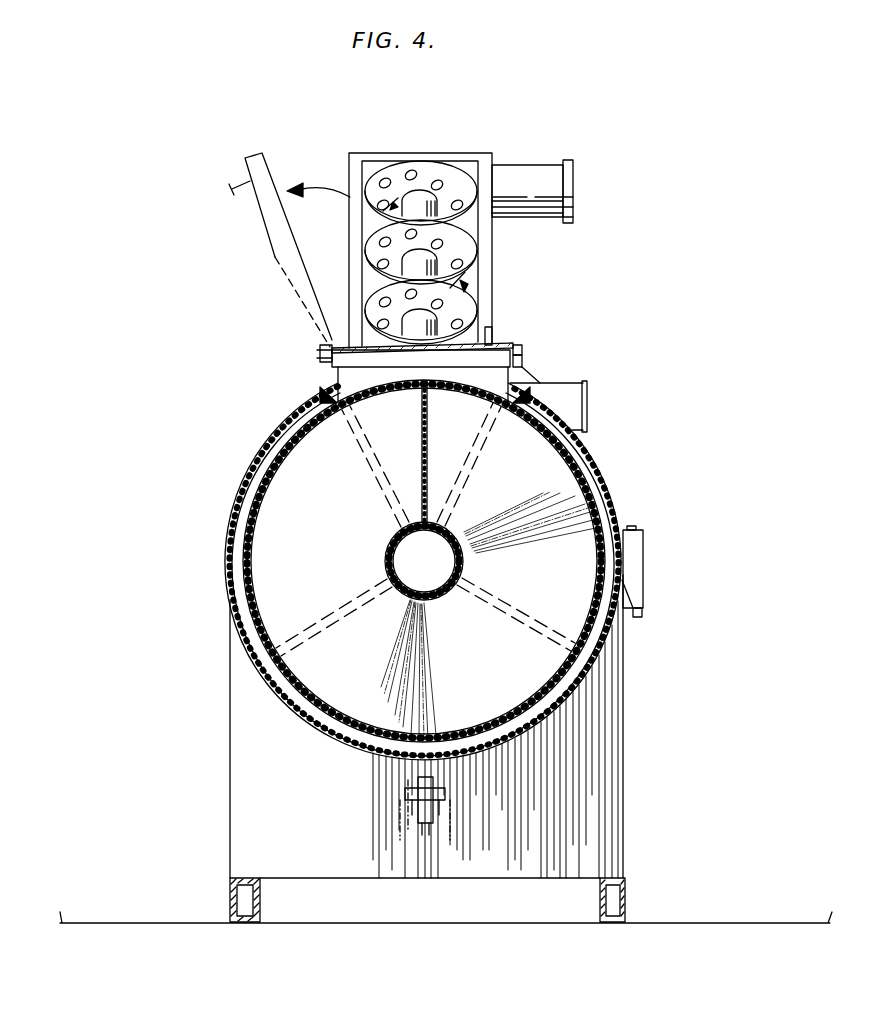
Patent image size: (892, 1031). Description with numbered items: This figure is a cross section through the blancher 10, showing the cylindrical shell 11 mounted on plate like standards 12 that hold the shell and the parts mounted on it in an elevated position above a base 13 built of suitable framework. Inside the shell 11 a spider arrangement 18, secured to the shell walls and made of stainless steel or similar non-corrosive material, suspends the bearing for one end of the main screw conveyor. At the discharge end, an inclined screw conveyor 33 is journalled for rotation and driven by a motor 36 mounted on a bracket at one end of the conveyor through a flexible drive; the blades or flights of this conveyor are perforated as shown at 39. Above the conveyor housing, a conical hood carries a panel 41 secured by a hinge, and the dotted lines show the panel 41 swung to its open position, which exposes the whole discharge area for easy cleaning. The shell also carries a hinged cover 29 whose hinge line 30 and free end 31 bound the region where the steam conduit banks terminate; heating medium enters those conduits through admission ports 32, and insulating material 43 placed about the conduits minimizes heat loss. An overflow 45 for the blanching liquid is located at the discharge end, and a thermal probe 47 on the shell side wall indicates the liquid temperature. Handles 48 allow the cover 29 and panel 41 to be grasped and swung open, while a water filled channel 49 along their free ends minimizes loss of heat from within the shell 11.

The blancher 10 is at (228, 484).
The cylindrical shell 11 is at (598, 456).
The plate like standards 12 is at (624, 690).
The base 13 is at (235, 880).
The spider arrangement 18 is at (429, 473).
The hinged cover 29 is at (360, 343).
The hinge line 30 is at (322, 355).
The free end 31 is at (516, 345).
The admission ports 32 is at (440, 819).
The inclined screw conveyor 33 is at (472, 265).
The motor 36 is at (533, 172).
The perforations 39 is at (449, 192).
The panel 41 is at (270, 270).
The insulating material 43 is at (608, 626).
The overflow 45 is at (568, 386).
The thermal probe 47 is at (637, 545).
The handle 48 is at (230, 196).
The water filled channel 49 is at (522, 372).